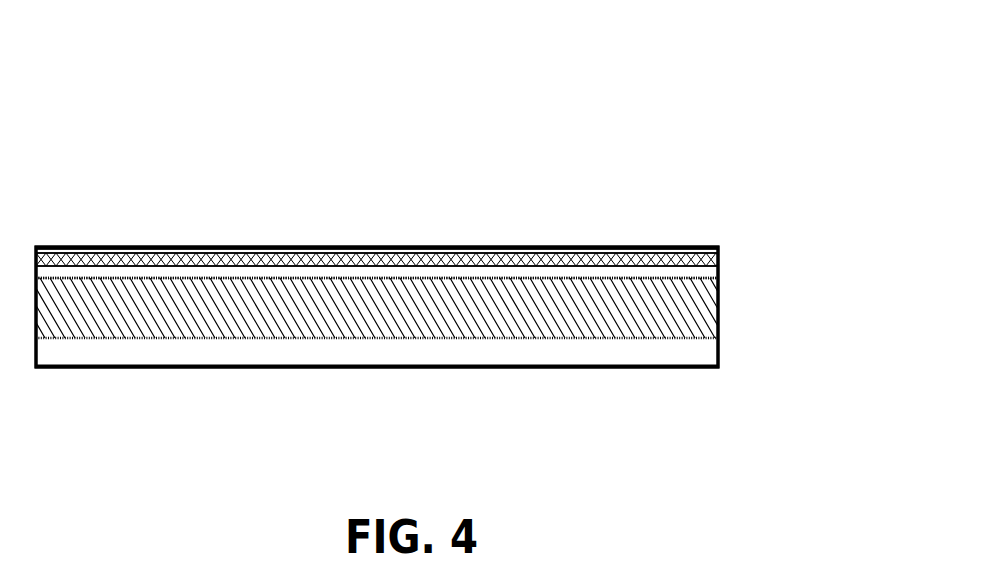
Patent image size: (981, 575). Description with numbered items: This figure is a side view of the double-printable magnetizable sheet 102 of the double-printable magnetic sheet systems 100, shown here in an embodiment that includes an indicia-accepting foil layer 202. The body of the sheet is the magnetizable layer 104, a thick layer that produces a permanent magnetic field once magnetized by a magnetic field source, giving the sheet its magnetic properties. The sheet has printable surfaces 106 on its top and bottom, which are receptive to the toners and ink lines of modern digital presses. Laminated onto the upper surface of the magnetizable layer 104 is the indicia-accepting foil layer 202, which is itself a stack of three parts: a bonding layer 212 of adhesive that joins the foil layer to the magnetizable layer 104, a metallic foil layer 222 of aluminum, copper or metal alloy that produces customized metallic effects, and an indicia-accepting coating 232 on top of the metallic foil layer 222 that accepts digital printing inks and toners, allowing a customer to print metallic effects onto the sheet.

The double-printable magnetic sheet systems 100 is at (619, 56).
The double-printable magnetizable sheet 102 is at (572, 150).
The magnetizable layer 104 is at (718, 310).
The printable surface 106 is at (90, 247).
The indicia-accepting foil layer 202 is at (227, 247).
The bonding layer 212 is at (718, 273).
The metallic foil layer 222 is at (718, 253).
The indicia-accepting coating 232 is at (688, 247).